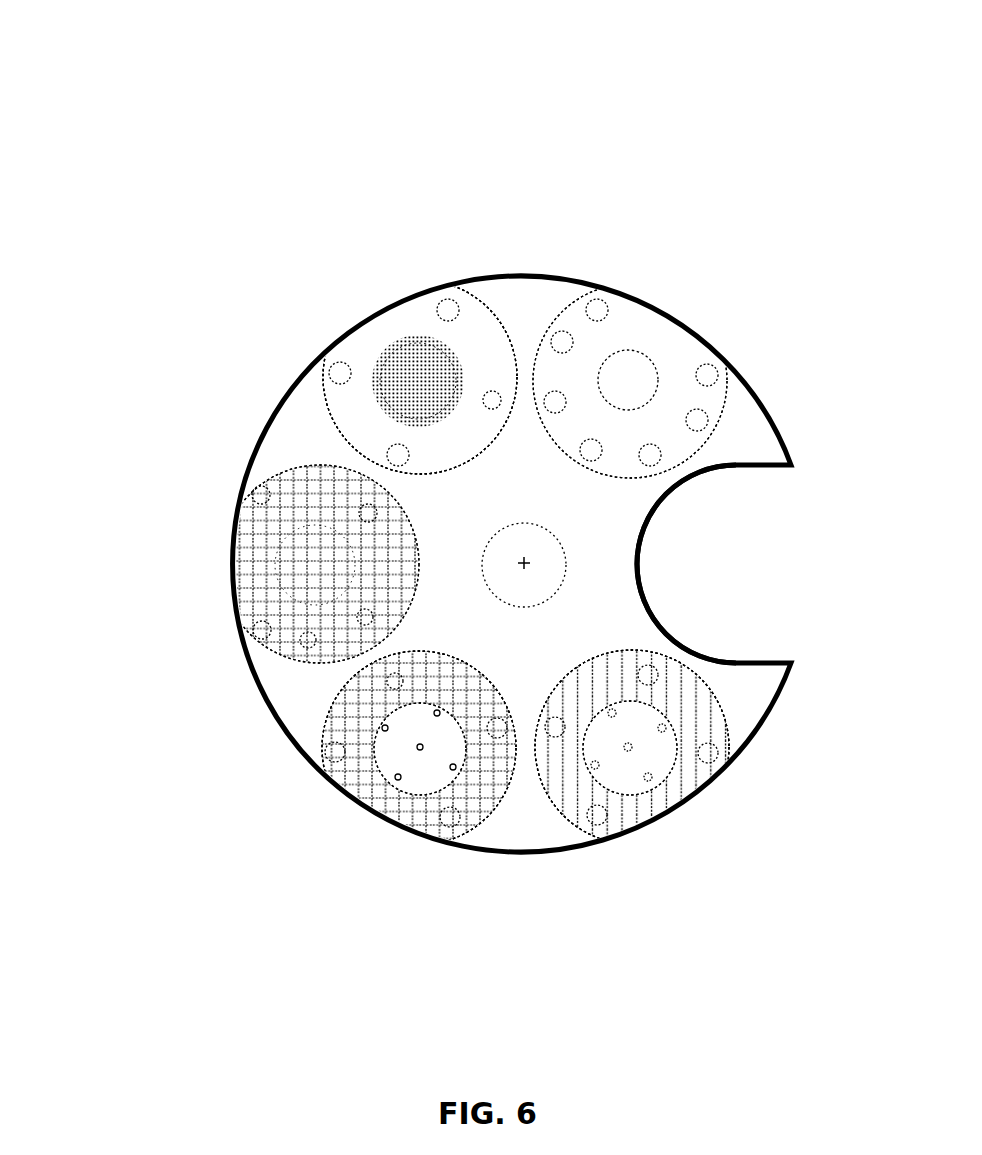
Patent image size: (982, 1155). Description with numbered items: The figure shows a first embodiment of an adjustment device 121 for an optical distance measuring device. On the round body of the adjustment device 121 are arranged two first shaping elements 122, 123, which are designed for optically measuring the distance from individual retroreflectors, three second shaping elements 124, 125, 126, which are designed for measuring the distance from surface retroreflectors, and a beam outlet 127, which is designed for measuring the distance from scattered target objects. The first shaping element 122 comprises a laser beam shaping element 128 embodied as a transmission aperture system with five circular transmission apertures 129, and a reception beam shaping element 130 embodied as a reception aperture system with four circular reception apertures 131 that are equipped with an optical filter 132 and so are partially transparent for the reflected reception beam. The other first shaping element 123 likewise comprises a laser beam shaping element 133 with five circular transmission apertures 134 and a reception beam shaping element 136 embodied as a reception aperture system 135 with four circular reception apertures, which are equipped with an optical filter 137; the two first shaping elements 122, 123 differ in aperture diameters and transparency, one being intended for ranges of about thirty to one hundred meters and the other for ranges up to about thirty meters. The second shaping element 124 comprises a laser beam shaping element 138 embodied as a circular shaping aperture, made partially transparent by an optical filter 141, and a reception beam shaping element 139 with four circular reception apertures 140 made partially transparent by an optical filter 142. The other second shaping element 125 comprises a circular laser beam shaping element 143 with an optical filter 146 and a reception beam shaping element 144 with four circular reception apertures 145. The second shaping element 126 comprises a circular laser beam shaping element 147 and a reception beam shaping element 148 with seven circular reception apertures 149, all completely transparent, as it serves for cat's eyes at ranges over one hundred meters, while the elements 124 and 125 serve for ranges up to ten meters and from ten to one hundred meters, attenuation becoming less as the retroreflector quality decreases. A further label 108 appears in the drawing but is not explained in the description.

The adjustment device 121 is at (506, 98).
The first shaping element 122 is at (712, 915).
The first shaping element 123 is at (347, 915).
The second shaping element 124 is at (146, 559).
The second shaping element 125 is at (368, 232).
The second shaping element 126 is at (668, 236).
The beam outlet 127 is at (774, 557).
The laser beam shaping element 128 is at (637, 792).
The transmission apertures 129 is at (612, 708).
The reception beam shaping element 130 is at (690, 700).
The reception apertures 131 is at (705, 778).
The optical filter 132 is at (720, 731).
The laser beam shaping element 133 is at (415, 793).
The transmission apertures 134 is at (420, 749).
The reception aperture system 135 is at (447, 672).
The reception beam shaping element 136 is at (340, 772).
The optical filter 137 is at (325, 751).
The laser beam shaping element 138 is at (357, 566).
The reception beam shaping element 139 is at (306, 646).
The reception apertures 140 is at (252, 494).
The optical filter 141 is at (352, 565).
The optical filter 142 is at (377, 515).
The laser beam shaping element 143 is at (415, 362).
The reception beam shaping element 144 is at (466, 427).
The reception apertures 145 is at (340, 362).
The optical filter 146 is at (422, 410).
The laser beam shaping element 147 is at (648, 370).
The reception beam shaping element 148 is at (682, 440).
The reception apertures 149 is at (597, 300).
The first zone plate 108 is at (420, 377).